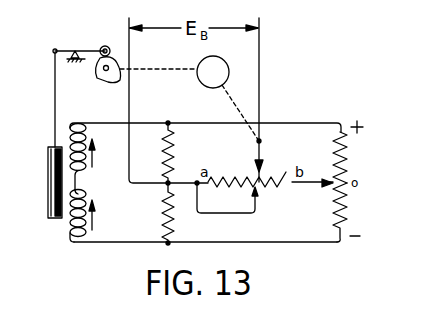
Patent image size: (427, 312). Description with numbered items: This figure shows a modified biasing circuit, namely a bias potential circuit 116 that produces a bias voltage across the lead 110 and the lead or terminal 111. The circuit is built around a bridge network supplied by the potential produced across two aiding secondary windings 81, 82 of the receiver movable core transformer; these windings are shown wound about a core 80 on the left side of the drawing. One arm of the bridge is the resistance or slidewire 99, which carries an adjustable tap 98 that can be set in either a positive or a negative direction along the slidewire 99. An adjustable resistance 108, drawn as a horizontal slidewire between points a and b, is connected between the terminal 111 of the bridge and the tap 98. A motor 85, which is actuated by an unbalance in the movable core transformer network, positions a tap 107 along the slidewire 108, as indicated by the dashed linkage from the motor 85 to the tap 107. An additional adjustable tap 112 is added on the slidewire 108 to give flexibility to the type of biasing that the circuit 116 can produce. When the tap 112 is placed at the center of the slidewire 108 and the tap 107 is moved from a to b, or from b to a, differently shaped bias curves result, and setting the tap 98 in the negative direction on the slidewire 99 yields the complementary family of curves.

The armature/core 80 is at (48, 172).
The secondary winding 81 is at (87, 168).
The secondary winding 82 is at (87, 198).
The motor 85 is at (203, 87).
The adjustable tap 98 is at (313, 181).
The slidewire 99 is at (348, 213).
The tap 107 is at (259, 150).
The adjustable resistance 108 is at (272, 188).
The lead 110 is at (129, 104).
The terminal 111 is at (260, 114).
The adjustable tap 112 is at (250, 201).
The bias potential circuit 116 is at (287, 239).